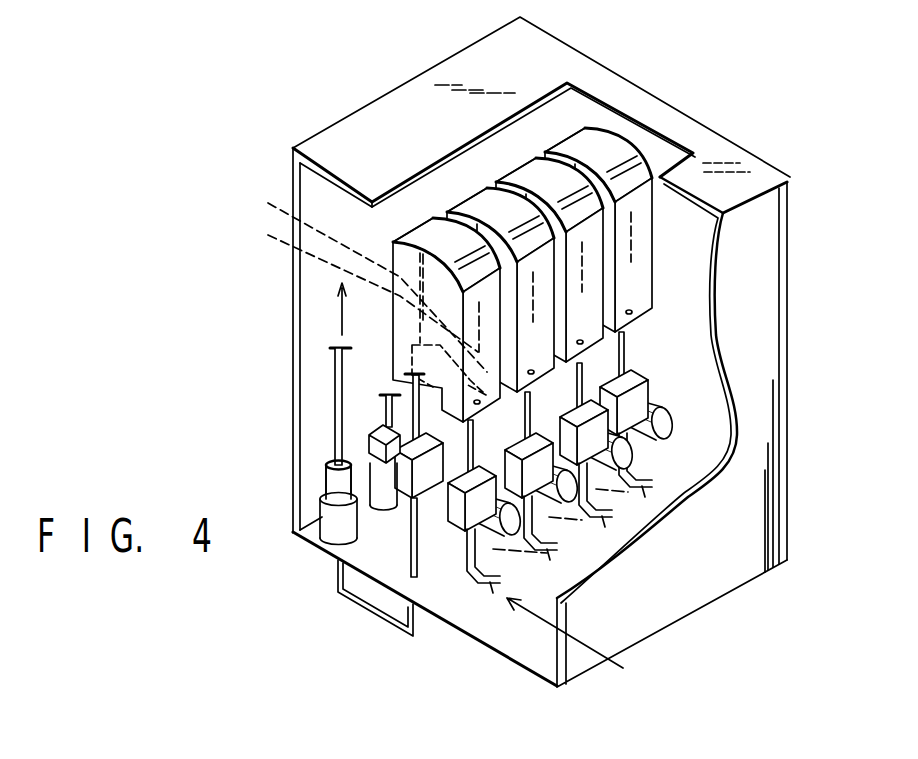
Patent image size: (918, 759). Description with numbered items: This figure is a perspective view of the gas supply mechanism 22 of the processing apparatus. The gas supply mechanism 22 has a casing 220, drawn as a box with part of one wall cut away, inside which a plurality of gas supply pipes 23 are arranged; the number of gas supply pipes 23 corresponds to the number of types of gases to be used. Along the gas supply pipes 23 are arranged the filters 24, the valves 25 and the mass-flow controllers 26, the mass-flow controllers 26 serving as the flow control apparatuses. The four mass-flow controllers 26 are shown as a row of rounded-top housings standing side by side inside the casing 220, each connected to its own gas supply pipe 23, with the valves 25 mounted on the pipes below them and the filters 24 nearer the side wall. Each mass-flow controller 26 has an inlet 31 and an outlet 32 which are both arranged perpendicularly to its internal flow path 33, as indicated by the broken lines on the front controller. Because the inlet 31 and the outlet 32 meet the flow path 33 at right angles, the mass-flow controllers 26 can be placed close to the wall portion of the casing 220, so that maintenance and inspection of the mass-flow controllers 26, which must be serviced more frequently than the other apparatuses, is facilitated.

The gas supply mechanism 22 is at (650, 78).
The casing 220 is at (740, 166).
The gas supply pipes 23 is at (413, 412).
The filters 24 is at (387, 503).
The valves 25 is at (457, 523).
The mass-flow controllers 26 is at (578, 147).
The inlet 31 is at (362, 291).
The outlet 32 is at (405, 380).
The flow path 33 is at (358, 285).